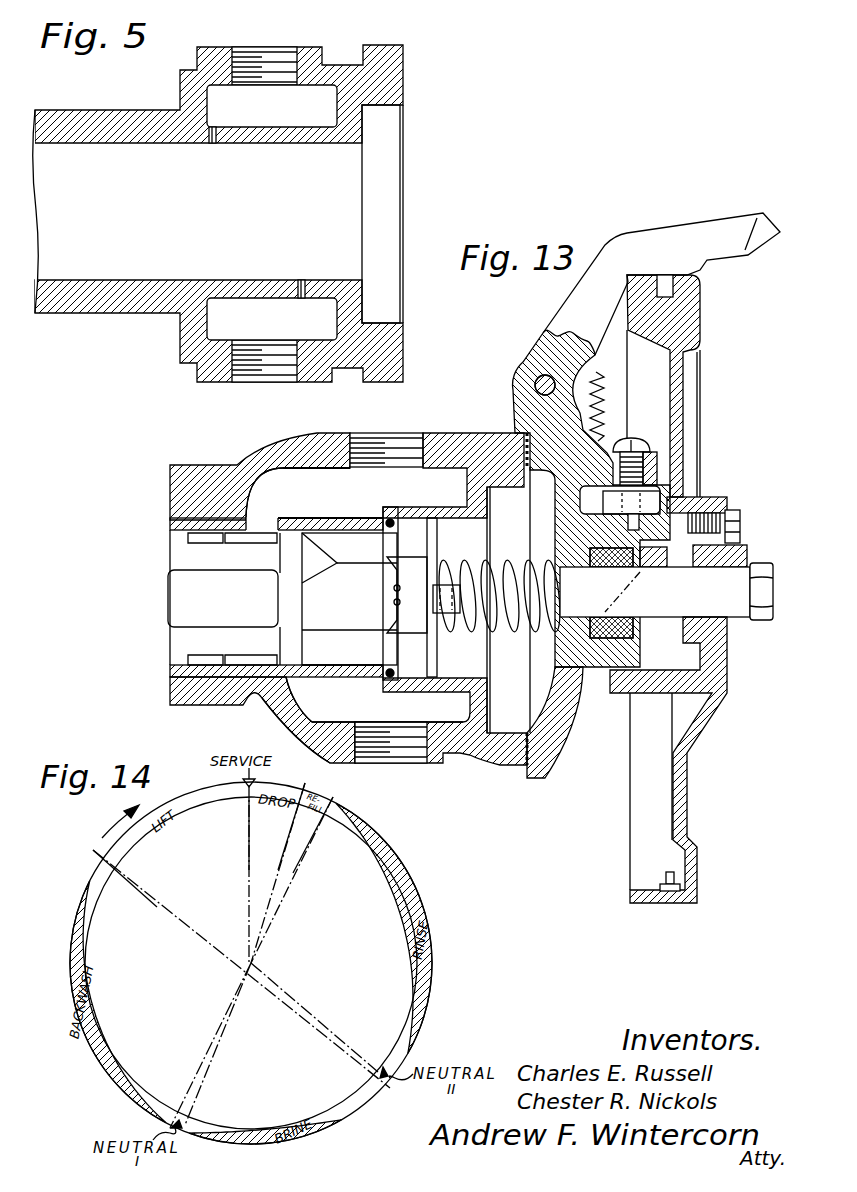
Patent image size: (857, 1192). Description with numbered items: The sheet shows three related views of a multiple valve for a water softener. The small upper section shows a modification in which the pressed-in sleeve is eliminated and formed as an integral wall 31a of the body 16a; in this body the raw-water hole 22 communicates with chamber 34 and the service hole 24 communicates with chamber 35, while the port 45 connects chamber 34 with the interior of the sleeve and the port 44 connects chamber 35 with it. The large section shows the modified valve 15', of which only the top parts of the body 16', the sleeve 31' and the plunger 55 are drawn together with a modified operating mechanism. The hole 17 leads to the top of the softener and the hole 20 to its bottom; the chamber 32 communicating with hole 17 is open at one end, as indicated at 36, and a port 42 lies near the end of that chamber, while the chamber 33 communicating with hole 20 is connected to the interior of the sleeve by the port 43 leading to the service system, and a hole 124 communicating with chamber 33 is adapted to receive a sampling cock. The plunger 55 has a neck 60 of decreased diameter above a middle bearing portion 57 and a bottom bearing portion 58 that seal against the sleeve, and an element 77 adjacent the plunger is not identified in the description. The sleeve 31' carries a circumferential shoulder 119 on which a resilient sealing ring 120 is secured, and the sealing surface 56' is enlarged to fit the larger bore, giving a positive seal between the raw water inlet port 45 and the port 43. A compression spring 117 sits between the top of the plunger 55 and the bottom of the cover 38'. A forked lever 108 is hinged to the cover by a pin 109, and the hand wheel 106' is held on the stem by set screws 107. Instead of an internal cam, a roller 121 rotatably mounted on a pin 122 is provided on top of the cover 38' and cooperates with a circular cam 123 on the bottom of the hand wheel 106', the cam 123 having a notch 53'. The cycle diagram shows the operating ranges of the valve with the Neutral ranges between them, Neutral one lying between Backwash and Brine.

In FIG. 5, the third hole 22 is at (272, 52).
In FIG. 5, the fourth hole 24 is at (278, 375).
In FIG. 5, the chamber 34 is at (272, 106).
In FIG. 5, the chamber 35 is at (272, 319).
In FIG. 5, the port 45 is at (228, 142).
In FIG. 13, the port 45 is at (488, 562).
In FIG. 5, the port 44 is at (317, 284).
In FIG. 5, the wall 31a is at (208, 283).
In FIG. 5, the body 16a is at (367, 345).
In FIG. 13, the modified valve 15' is at (260, 472).
In FIG. 13, the hole 17 is at (393, 432).
In FIG. 13, the open end 36 is at (467, 477).
In FIG. 13, the port 42 is at (263, 525).
In FIG. 13, the chamber 32 is at (330, 493).
In FIG. 13, the sleeve 31' is at (247, 519).
In FIG. 13, the bottom cylindrical bearing portion 58 is at (172, 656).
In FIG. 13, the body 16' is at (262, 720).
In FIG. 13, the hole 124 is at (276, 728).
In FIG. 13, the circumferential shoulder 119 is at (380, 683).
In FIG. 13, the hole 20 is at (400, 755).
In FIG. 13, the chamber 33 is at (387, 711).
In FIG. 13, the plunger 55 is at (180, 556).
In FIG. 13, the middle cylindrical bearing portion 57 is at (290, 607).
In FIG. 13, the neck 60 is at (343, 568).
In FIG. 13, the port 43 is at (328, 667).
In FIG. 13, the sealing ring 120 is at (392, 518).
In FIG. 13, the sealing surface 56' is at (445, 598).
In FIG. 13, the valve member 77 is at (400, 587).
In FIG. 13, the compression spring 117 is at (498, 630).
In FIG. 13, the forked lever 108 is at (657, 233).
In FIG. 13, the pin 109 is at (535, 387).
In FIG. 13, the pin 122 is at (645, 447).
In FIG. 13, the roller 121 is at (660, 493).
In FIG. 13, the notch 53' is at (720, 509).
In FIG. 13, the set screws 107 is at (755, 633).
In FIG. 13, the hand wheel 106' is at (693, 760).
In FIG. 13, the circular cam 123 is at (660, 684).
In FIG. 13, the cover 38' is at (568, 722).